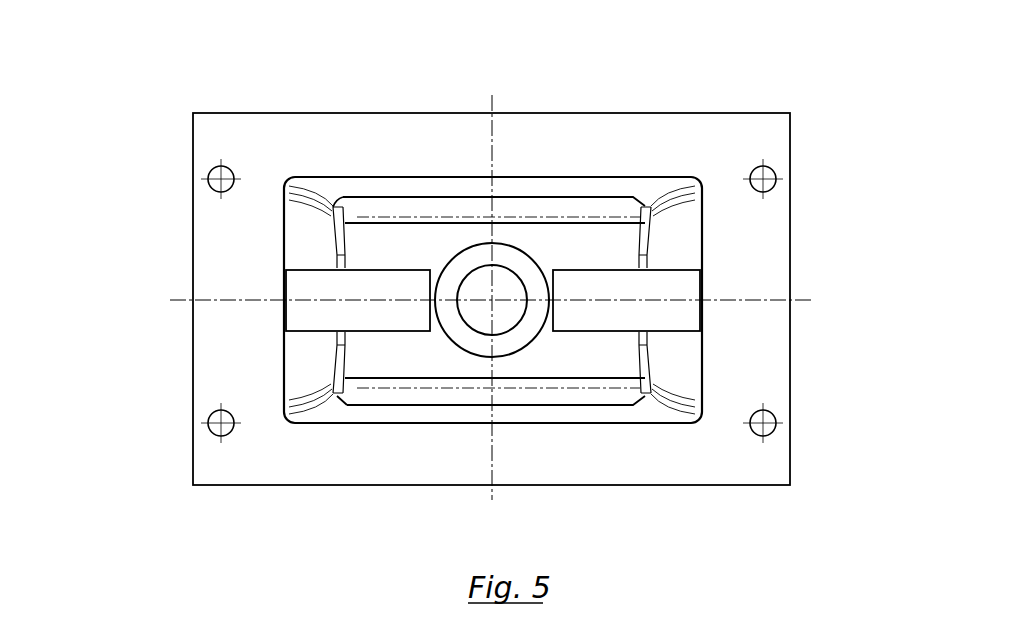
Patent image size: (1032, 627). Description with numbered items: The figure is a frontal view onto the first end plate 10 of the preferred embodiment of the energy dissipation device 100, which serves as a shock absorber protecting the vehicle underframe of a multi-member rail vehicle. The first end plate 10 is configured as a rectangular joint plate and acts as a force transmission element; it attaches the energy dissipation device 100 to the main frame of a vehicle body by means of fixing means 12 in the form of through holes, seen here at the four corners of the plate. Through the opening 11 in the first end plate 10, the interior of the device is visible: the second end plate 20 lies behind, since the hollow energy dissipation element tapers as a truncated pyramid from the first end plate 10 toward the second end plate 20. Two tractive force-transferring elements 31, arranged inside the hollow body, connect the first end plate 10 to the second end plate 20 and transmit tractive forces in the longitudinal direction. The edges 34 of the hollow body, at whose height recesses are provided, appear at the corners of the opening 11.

The energy dissipation device 100 is at (64, 62).
The first end plate 10 is at (755, 322).
The opening in first end plate 11 is at (443, 181).
The fixing means 12 is at (763, 173).
The second end plate 20 is at (368, 243).
The tractive force-transferring element 31 is at (318, 288).
The edge of the hollow body 34 is at (678, 190).